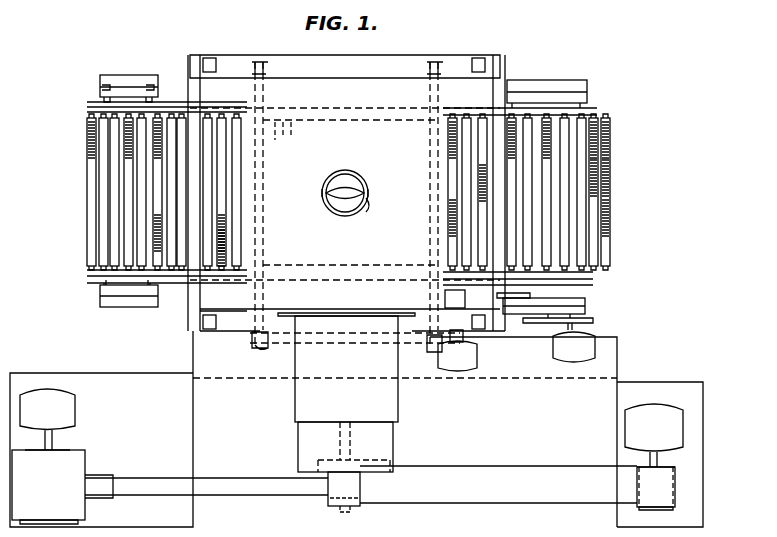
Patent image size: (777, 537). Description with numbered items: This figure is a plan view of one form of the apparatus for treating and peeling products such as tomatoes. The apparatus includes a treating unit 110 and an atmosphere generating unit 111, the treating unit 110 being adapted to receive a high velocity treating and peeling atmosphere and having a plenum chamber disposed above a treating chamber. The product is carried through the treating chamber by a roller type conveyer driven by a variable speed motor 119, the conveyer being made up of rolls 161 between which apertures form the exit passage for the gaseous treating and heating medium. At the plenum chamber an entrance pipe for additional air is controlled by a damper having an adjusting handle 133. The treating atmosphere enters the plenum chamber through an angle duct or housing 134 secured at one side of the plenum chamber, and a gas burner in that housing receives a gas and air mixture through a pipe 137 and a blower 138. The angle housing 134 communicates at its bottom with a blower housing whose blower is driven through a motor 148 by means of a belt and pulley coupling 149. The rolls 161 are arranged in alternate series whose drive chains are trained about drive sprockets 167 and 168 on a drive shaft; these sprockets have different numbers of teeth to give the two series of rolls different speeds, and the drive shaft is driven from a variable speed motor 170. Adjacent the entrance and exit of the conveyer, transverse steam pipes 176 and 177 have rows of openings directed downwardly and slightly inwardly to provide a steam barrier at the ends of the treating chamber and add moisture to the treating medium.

The treating unit 110 is at (400, 88).
The atmosphere generating unit 111 is at (385, 457).
The variable speed motor 119 is at (556, 351).
The adjusting handle 133 is at (366, 206).
The angle duct or housing 134 is at (388, 415).
The pipe 137 is at (222, 490).
The blower 138 is at (72, 468).
The motor 148 is at (678, 427).
The belt and pulley coupling 149 is at (362, 497).
The rolls 161 is at (128, 153).
The drive sprocket 167 is at (98, 289).
The drive sprocket 168 is at (97, 107).
The variable speed motor 170 is at (468, 373).
The transverse steam pipe 176 is at (256, 341).
The transverse steam pipe 177 is at (428, 344).